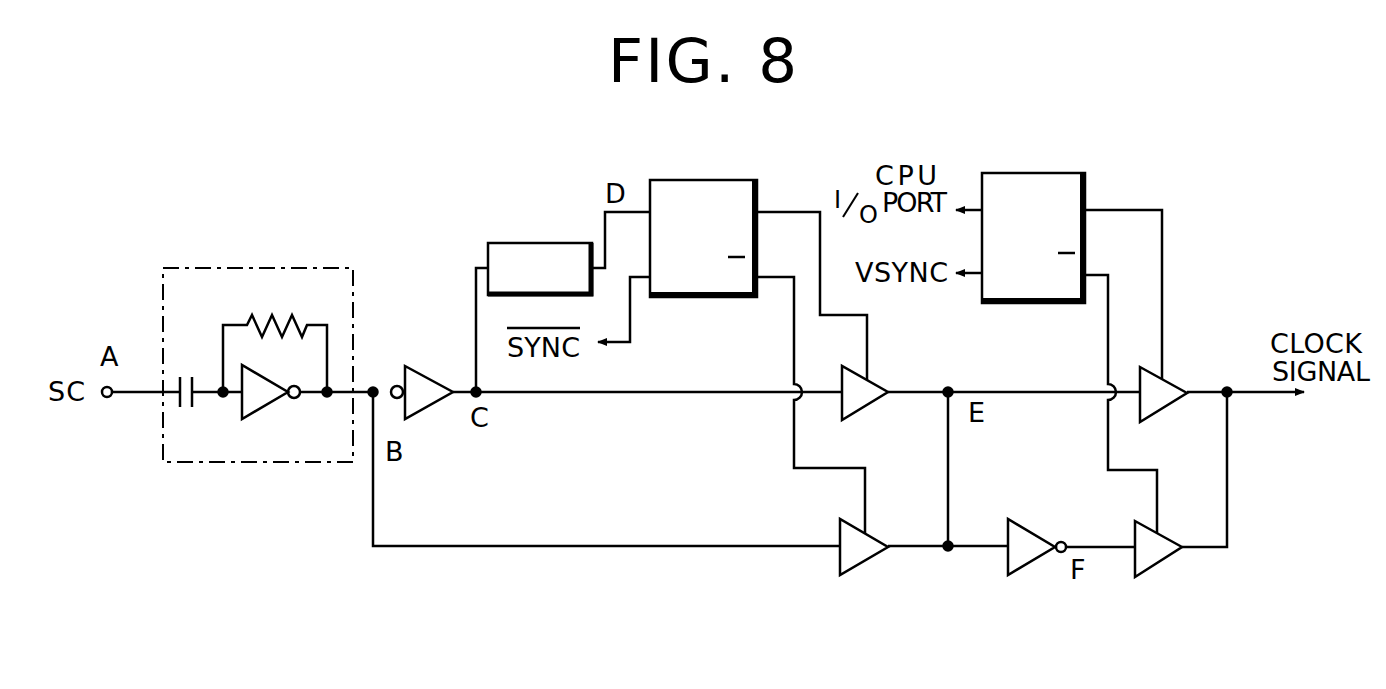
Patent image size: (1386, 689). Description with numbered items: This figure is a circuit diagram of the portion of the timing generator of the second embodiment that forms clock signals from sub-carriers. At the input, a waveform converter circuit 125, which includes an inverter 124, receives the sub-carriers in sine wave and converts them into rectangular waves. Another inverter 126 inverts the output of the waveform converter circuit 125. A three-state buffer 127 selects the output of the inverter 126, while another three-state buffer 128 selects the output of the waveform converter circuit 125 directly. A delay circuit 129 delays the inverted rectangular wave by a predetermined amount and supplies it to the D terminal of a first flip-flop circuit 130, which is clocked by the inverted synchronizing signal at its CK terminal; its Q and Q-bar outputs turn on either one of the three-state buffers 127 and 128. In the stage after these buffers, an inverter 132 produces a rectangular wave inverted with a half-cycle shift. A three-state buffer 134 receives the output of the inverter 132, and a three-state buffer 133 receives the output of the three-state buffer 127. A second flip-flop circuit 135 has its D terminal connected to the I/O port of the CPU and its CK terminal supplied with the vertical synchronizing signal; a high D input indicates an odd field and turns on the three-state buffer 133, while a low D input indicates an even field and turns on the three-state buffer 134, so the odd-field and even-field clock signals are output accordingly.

The inverter 124 is at (270, 403).
The waveform converter circuit 125 is at (268, 344).
The inverter 126 is at (415, 365).
The three-state buffer 127 is at (876, 382).
The three-state buffer 128 is at (856, 572).
The delay circuit 129 is at (509, 243).
The first flip-flop circuit 130 is at (697, 180).
The inverter 132 is at (1024, 572).
The three-state buffer 133 is at (1172, 380).
The three-state buffer 134 is at (1137, 578).
The second flip-flop circuit 135 is at (1025, 173).